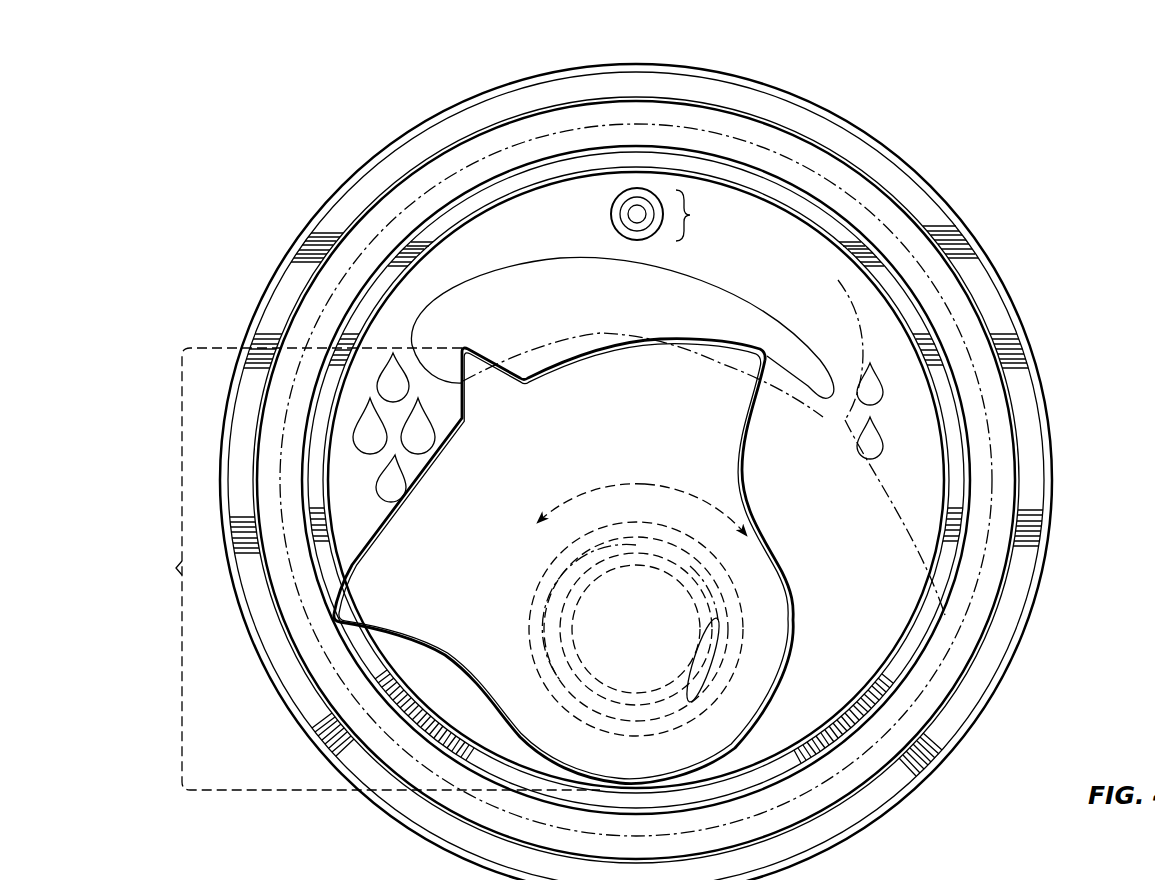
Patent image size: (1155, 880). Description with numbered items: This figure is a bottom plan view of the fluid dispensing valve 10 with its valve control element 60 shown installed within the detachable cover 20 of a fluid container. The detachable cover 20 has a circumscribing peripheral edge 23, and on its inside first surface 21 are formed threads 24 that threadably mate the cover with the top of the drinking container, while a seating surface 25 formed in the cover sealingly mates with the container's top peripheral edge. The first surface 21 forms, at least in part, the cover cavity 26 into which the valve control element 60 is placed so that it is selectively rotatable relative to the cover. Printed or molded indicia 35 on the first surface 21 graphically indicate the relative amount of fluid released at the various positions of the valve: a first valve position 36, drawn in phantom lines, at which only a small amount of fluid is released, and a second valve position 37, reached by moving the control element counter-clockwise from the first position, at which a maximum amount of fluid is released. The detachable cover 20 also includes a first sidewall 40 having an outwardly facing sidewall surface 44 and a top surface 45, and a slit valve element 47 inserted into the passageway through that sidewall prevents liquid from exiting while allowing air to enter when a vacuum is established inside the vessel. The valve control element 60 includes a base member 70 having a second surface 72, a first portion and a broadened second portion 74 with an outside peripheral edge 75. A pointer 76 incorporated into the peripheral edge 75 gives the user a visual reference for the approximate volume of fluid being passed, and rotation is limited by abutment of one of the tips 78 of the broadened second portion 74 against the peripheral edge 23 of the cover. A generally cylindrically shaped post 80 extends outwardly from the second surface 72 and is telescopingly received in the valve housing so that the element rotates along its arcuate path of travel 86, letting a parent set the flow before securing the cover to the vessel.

The fluid dispensing valve 10 is at (371, 569).
The detachable cover 20 is at (988, 238).
The first surface 21 is at (370, 491).
The peripheral edge 23 is at (933, 216).
The threads 24 is at (446, 160).
The seating surface 25 is at (493, 190).
The cover cavity 26 is at (812, 248).
The indicia 35 is at (724, 283).
The first valve position 36 is at (836, 336).
The second valve position 37 is at (453, 332).
The first sidewall 40 is at (634, 175).
The outwardly facing sidewall surface 44 is at (622, 192).
The top surface 45 is at (621, 235).
The slit valve element 47 is at (627, 208).
The valve control element 60 is at (503, 724).
The base member 70 is at (573, 602).
The second surface 72 is at (848, 590).
The broadened second portion 74 is at (493, 434).
The outside peripheral edge 75 is at (600, 340).
The pointer 76 is at (460, 346).
The tips 78 is at (523, 377).
The cylindrically shaped post 80 is at (620, 636).
The path of travel 86 is at (574, 504).